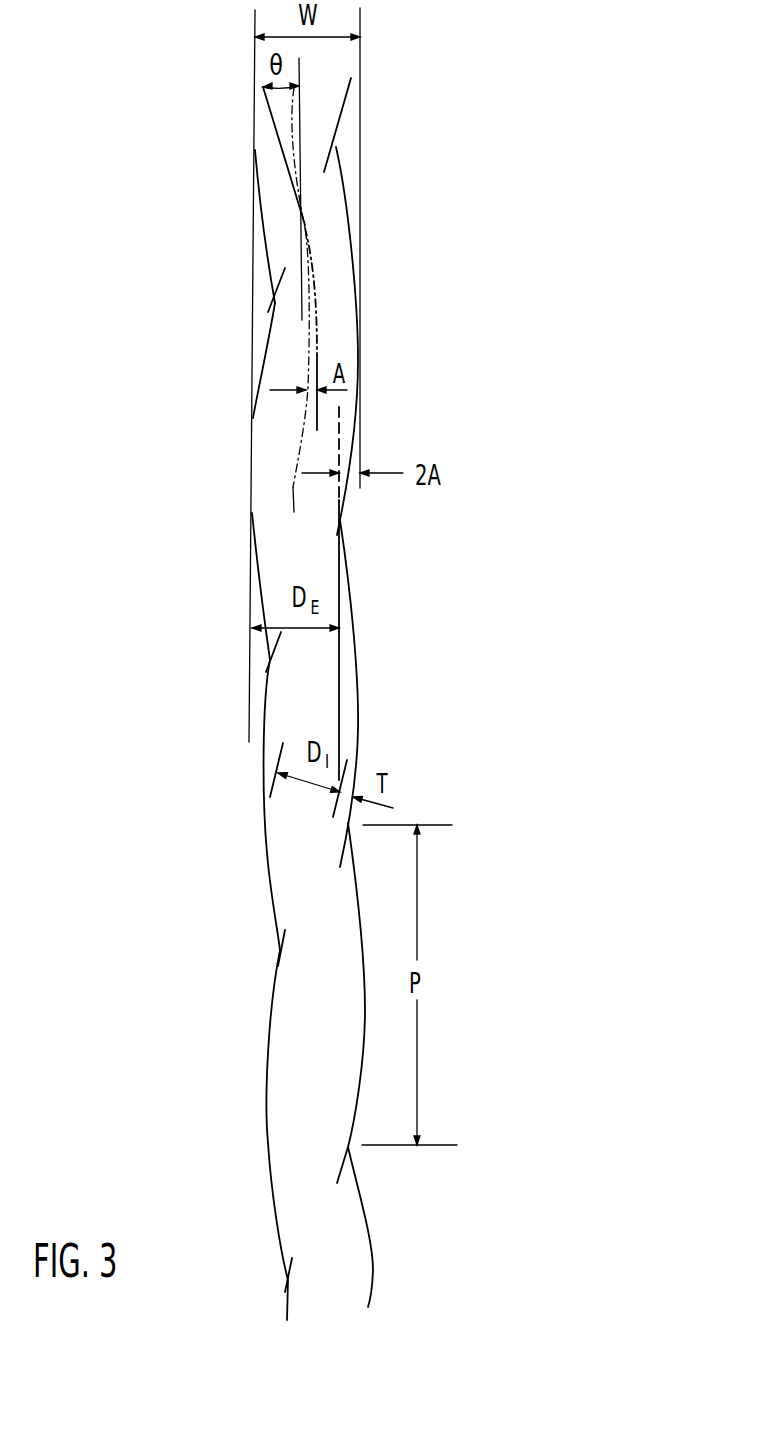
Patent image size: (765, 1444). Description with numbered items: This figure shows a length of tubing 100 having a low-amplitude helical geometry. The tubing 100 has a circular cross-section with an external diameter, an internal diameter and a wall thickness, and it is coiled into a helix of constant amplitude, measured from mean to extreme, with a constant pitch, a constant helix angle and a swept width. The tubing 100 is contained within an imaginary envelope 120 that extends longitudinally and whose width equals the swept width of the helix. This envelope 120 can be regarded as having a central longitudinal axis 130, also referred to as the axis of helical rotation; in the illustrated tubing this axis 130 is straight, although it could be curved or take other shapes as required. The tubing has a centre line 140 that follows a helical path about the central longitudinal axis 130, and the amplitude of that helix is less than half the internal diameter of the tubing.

The tubing 100 is at (185, 942).
The imaginary envelope 120 is at (361, 184).
The central longitudinal axis 130 is at (304, 320).
The centre line 140 is at (298, 448).